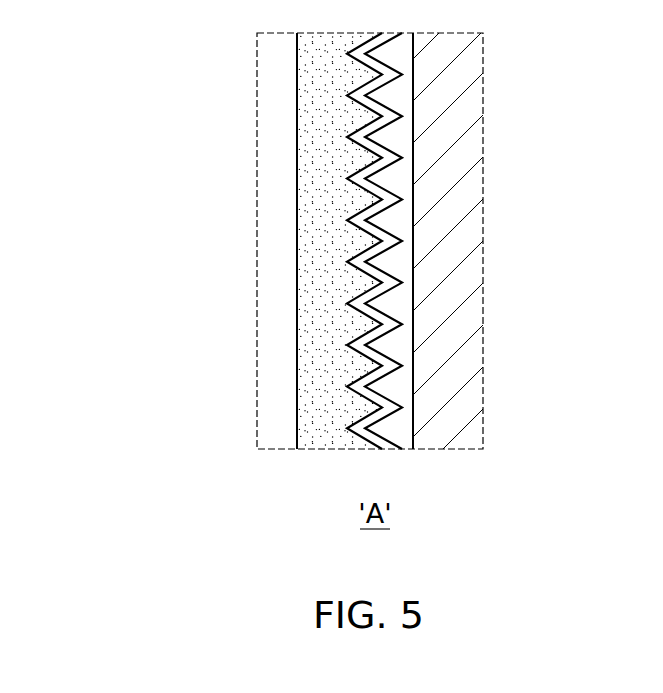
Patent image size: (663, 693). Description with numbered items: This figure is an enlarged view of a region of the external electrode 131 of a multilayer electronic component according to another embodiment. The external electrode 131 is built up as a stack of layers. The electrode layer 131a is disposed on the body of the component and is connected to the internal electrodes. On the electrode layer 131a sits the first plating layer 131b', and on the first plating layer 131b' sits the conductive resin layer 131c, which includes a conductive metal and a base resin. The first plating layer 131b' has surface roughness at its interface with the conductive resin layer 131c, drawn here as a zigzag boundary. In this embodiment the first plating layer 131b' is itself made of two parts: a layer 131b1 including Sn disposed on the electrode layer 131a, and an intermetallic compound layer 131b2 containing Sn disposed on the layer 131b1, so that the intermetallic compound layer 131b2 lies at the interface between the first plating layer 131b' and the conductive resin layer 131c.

The external electrode 131 is at (268, 260).
The electrode layer 131a is at (452, 77).
The first plating layer 131b' is at (252, 241).
The layer including Sn 131b1 is at (405, 220).
The intermetallic compound layer 131b2 is at (360, 158).
The conductive resin layer 131c is at (317, 260).